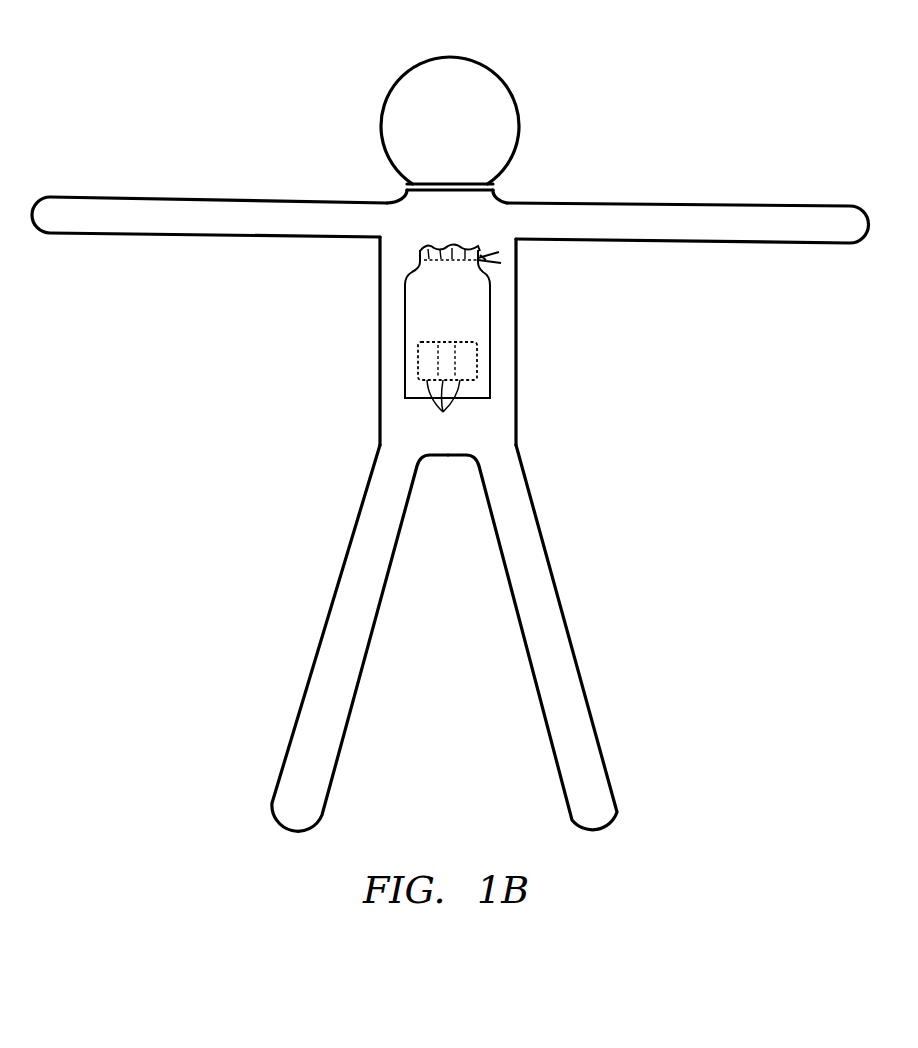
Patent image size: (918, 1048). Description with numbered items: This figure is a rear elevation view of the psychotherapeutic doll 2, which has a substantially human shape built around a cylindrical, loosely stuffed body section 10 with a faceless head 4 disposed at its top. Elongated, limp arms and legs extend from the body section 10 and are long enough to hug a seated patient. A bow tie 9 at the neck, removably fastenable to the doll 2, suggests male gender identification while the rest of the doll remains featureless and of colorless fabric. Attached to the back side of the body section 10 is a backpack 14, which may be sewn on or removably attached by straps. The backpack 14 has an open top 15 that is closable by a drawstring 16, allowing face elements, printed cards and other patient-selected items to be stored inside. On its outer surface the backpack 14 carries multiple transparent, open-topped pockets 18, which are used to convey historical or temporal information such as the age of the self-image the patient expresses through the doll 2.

The doll 2 is at (521, 65).
The head section 4 is at (520, 128).
The bow tie 9 is at (451, 182).
The body section 10 is at (517, 330).
The backpack 14 is at (475, 401).
The open top 15 is at (450, 246).
The drawstring 16 is at (480, 256).
The pockets 18 is at (447, 390).